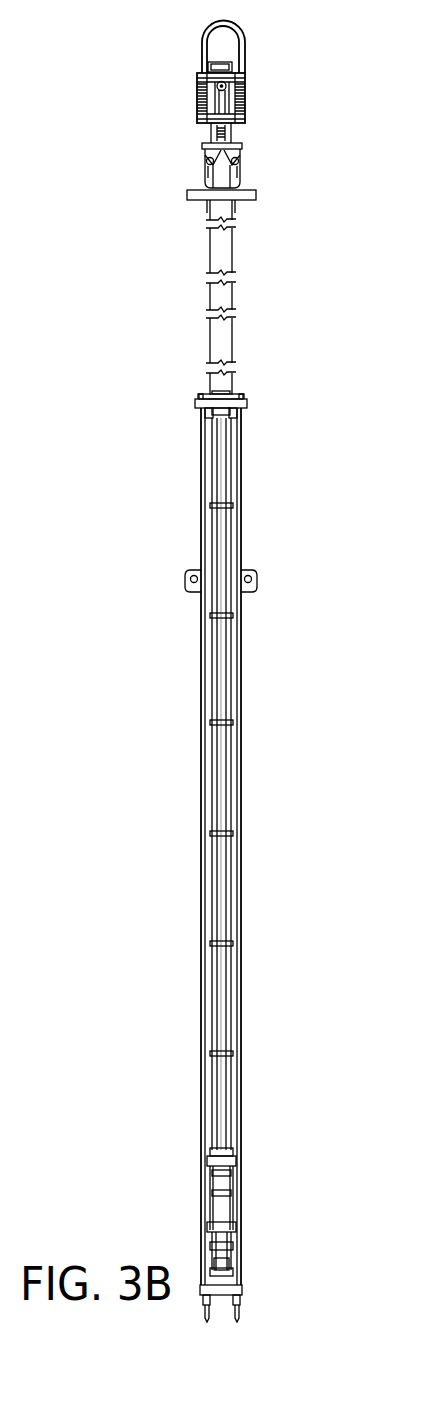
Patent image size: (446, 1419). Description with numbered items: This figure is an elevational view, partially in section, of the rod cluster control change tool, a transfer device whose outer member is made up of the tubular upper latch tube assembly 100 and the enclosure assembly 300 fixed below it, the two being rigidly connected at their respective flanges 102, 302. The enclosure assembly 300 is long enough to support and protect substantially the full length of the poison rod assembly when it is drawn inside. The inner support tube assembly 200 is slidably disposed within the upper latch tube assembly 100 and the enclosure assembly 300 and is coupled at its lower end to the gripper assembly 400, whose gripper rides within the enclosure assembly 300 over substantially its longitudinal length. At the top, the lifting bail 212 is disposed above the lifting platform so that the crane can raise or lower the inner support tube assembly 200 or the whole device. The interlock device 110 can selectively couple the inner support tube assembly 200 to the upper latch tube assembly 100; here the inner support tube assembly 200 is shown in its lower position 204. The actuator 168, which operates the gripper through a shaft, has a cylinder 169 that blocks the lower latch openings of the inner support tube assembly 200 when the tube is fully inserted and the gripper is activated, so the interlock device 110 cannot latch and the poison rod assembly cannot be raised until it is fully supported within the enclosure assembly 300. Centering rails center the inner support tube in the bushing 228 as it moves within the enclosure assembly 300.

The lifting bail 212 is at (200, 37).
The actuator 168 is at (225, 58).
The cylinder 169 is at (197, 103).
The inner support tube assembly 200 is at (226, 108).
The lower position 204 is at (263, 145).
The upper latch tube assembly 100 is at (203, 150).
The interlock device 110 is at (242, 170).
The flange 102 is at (247, 397).
The flange 302 is at (249, 404).
The bushing 228 is at (213, 416).
The enclosure assembly 300 is at (243, 683).
The gripper assembly 400 is at (223, 1197).